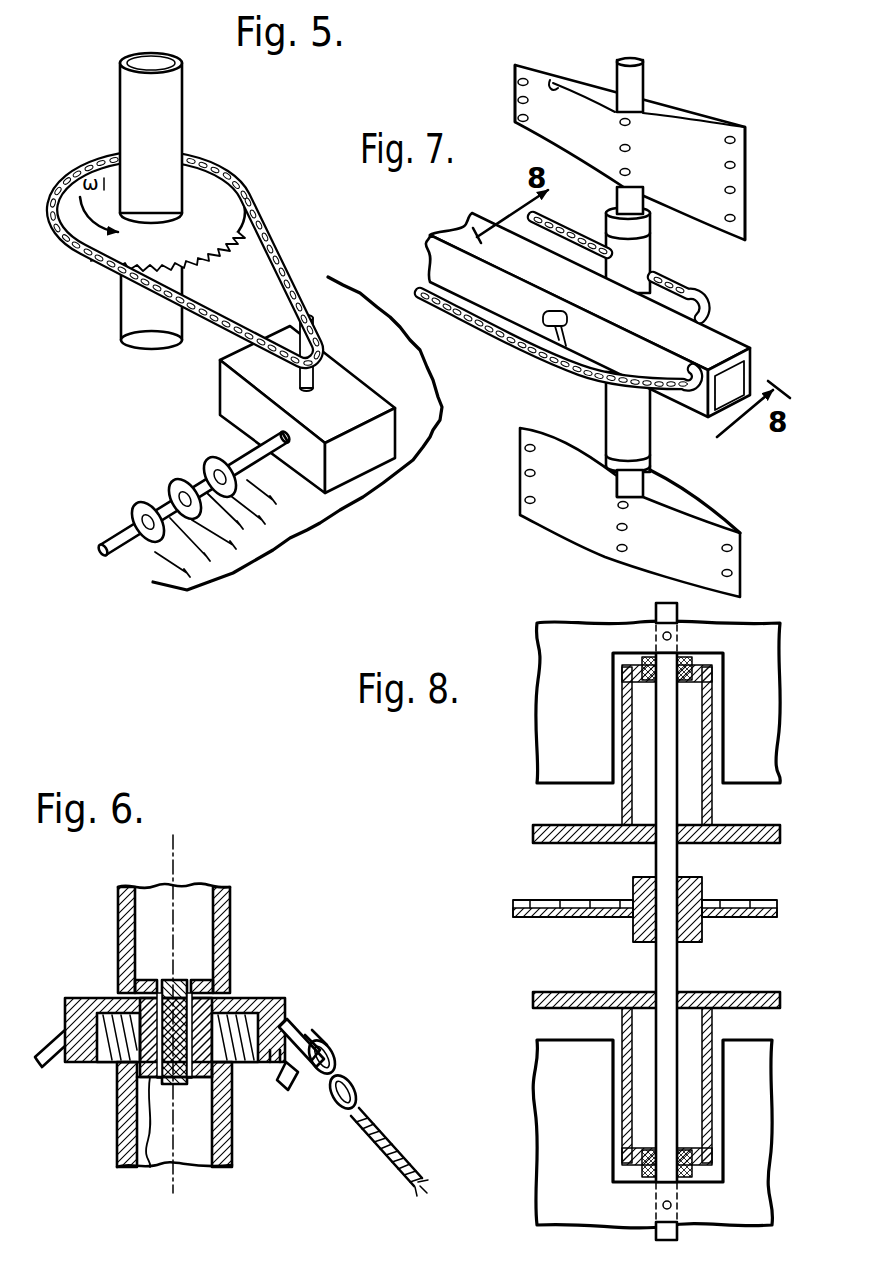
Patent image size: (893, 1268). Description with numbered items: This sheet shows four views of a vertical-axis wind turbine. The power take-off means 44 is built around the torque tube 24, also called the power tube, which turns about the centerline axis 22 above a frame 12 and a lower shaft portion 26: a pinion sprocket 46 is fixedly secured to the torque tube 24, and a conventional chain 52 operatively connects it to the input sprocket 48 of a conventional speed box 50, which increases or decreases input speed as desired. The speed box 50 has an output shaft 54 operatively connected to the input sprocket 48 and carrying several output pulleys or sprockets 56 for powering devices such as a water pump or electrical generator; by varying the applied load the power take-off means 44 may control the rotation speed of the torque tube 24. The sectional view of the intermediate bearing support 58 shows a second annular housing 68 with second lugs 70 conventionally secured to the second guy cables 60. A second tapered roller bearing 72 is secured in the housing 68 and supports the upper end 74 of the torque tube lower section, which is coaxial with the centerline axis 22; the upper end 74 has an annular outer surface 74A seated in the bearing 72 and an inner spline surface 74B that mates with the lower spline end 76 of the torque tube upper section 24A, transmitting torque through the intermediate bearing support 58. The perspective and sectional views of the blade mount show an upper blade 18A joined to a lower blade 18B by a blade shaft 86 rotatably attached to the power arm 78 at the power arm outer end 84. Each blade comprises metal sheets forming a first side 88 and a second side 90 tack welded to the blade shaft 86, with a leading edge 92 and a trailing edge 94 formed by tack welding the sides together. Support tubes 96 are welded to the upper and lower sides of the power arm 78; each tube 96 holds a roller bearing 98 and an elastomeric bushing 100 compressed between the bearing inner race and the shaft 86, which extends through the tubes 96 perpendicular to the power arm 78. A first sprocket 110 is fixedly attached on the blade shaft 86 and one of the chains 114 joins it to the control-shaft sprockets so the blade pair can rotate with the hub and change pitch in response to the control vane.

In FIG. 5, the frame 12 is at (287, 520).
In FIG. 6, the centerline axis 22 is at (176, 848).
In FIG. 5, the torque tube 24 is at (184, 100).
In FIG. 6, the torque tube upper section 24A is at (232, 905).
In FIG. 5, the lower shaft 26 is at (119, 312).
In FIG. 5, the power take-off means 44 is at (268, 206).
In FIG. 5, the pinion sprocket 46 is at (197, 197).
In FIG. 5, the input sprocket 48 is at (290, 338).
In FIG. 5, the speed box 50 is at (228, 386).
In FIG. 5, the chain 52 is at (292, 257).
In FIG. 5, the output shaft 54 is at (118, 537).
In FIG. 5, the output pulleys or sprockets 56 is at (163, 487).
In FIG. 6, the intermediate bearing support 58 is at (286, 996).
In FIG. 6, the second guy cables 60 is at (358, 1104).
In FIG. 6, the second annular housing 68 is at (275, 1064).
In FIG. 6, the second lugs 70 is at (300, 1024).
In FIG. 6, the second tapered roller bearing 72 is at (236, 1064).
In FIG. 6, the upper end 74 is at (124, 1098).
In FIG. 6, the annular outer surface 74A is at (130, 1058).
In FIG. 6, the inner spline surface 74B is at (148, 1165).
In FIG. 6, the lower spline end 76 is at (178, 1083).
In FIG. 7, the power arm 78 is at (487, 213).
In FIG. 8, the power arm 78 is at (556, 826).
In FIG. 7, the power arm outer end 84 is at (732, 339).
In FIG. 7, the blade shaft 86 is at (644, 78).
In FIG. 8, the blade shaft 86 is at (655, 958).
In FIG. 7, the first side 88 is at (580, 78).
In FIG. 7, the second side 90 is at (554, 82).
In FIG. 7, the leading edge 92 is at (516, 87).
In FIG. 7, the trailing edge 94 is at (746, 143).
In FIG. 7, the support tubes 96 is at (648, 249).
In FIG. 8, the support tubes 96 is at (713, 810).
In FIG. 8, the roller bearing 98 is at (699, 1176).
In FIG. 8, the elastomeric bushing 100 is at (642, 1176).
In FIG. 7, the first sprocket 110 is at (570, 336).
In FIG. 8, the first sprocket 110 is at (732, 903).
In FIG. 7, the chains 114 is at (521, 345).
In FIG. 8, the chains 114 is at (537, 902).
In FIG. 7, the upper blade 18A is at (748, 205).
In FIG. 8, the upper blade 18A is at (546, 636).
In FIG. 7, the lower blade 18B is at (745, 545).
In FIG. 8, the lower blade 18B is at (528, 1058).